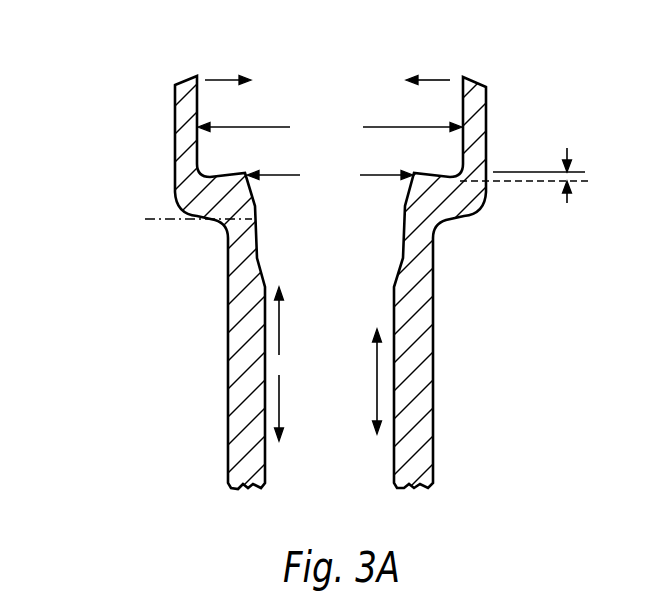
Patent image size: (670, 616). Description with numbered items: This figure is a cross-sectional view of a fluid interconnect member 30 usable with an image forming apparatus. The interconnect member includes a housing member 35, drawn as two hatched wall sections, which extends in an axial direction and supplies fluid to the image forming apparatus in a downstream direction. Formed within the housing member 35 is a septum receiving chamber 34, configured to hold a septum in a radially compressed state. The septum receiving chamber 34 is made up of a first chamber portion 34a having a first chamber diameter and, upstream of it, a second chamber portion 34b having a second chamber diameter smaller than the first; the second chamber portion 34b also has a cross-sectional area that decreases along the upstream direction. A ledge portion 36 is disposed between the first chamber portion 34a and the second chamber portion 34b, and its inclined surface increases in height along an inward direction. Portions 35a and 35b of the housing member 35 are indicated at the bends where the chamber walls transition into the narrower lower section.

The contact pin / spring contact assembly 30 is at (338, 36).
The septum receiving chamber 34 is at (82, 77).
The first chamber portion 34a is at (147, 77).
The second chamber portion 34b is at (147, 177).
The housing member 35 is at (415, 388).
The knee of left contact leg 35a is at (224, 221).
The knee of right contact leg 35b is at (438, 222).
The ledge portion 36 is at (222, 175).